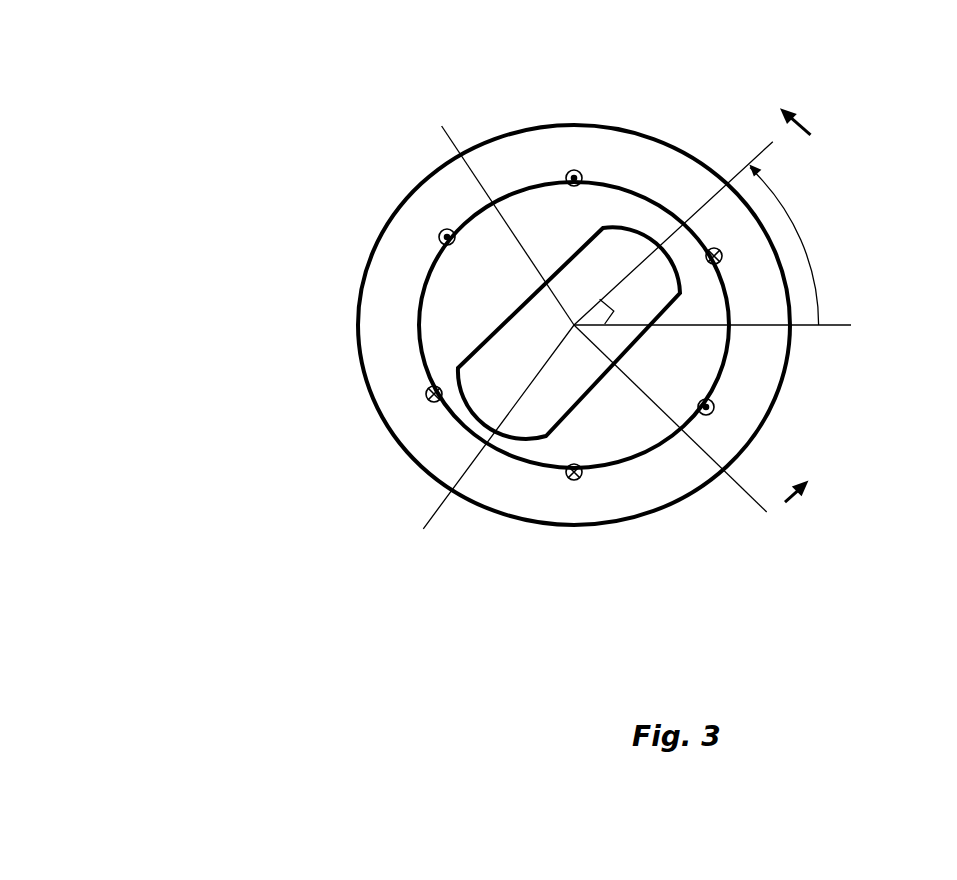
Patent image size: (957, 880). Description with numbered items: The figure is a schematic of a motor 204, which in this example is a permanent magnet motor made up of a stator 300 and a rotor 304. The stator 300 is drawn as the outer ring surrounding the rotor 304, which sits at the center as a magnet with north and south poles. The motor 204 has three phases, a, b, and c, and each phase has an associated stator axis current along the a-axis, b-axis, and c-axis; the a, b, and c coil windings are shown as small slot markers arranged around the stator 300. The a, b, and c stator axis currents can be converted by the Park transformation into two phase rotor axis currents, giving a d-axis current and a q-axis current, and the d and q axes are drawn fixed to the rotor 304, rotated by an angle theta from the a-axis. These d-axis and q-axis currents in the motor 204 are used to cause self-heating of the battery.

The motor 204 is at (224, 99).
The stator 300 is at (351, 302).
The rotor 304 is at (474, 337).